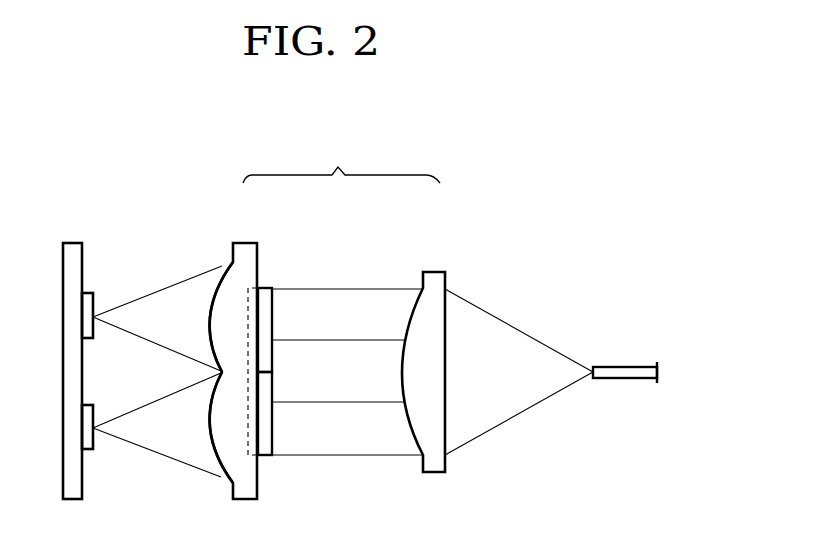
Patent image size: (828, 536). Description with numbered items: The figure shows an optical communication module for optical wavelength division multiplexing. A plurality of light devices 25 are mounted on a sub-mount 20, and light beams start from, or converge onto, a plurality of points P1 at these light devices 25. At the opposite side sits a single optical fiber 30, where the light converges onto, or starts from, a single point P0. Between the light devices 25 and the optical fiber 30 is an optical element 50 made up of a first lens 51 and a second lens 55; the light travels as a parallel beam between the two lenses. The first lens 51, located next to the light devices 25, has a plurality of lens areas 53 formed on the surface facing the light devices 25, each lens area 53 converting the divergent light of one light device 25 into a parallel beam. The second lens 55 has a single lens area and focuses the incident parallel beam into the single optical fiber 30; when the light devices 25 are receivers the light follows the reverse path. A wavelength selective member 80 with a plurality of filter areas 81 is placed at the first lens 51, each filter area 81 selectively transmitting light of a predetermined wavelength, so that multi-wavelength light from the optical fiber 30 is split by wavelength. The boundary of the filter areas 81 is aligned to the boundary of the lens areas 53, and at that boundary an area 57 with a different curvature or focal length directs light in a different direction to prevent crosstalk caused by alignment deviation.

The sub-mount 20 is at (73, 240).
The light devices 25 is at (92, 296).
The plurality of points P1 is at (95, 316).
The optical element 50 is at (341, 161).
The first lens 51 is at (246, 241).
The lens areas 53 is at (210, 320).
The area 57 is at (220, 374).
The wavelength selective member 80 is at (272, 280).
The filter areas 81 is at (268, 320).
The second lens 55 is at (436, 271).
The optical fiber 30 is at (628, 366).
The single point P0 is at (592, 378).